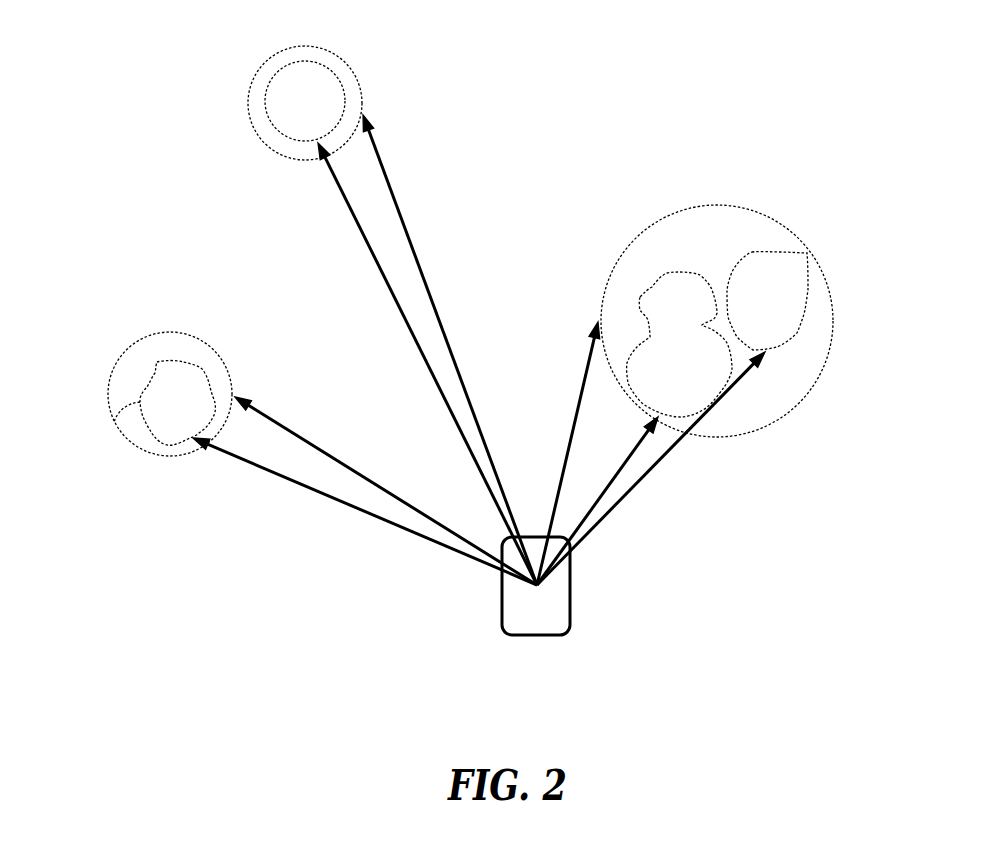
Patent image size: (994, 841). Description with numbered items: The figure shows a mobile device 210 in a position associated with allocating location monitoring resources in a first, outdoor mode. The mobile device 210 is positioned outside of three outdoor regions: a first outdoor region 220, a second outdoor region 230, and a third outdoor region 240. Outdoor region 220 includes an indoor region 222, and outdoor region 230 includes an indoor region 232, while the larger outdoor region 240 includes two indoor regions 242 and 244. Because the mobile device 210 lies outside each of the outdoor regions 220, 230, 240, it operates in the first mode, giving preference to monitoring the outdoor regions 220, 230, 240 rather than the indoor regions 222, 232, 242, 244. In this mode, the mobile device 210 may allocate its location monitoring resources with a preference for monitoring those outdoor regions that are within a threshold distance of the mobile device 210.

The mobile device 210 is at (542, 637).
The outdoor region 220 is at (208, 342).
The indoor region 222 is at (115, 418).
The outdoor region 230 is at (362, 82).
The indoor region 232 is at (340, 63).
The outdoor region 240 is at (735, 207).
The indoor region 242 is at (652, 285).
The indoor region 244 is at (807, 252).